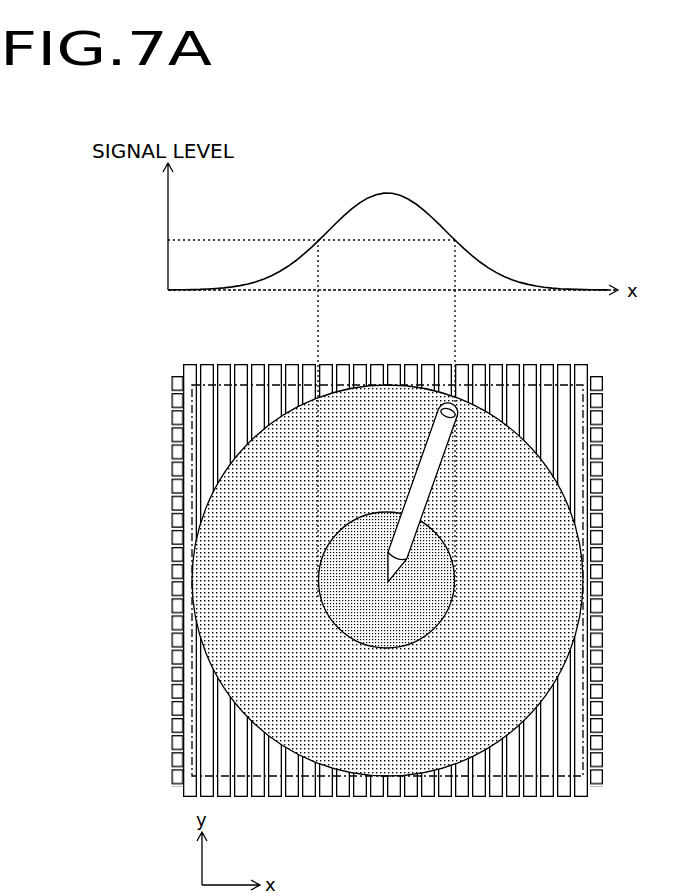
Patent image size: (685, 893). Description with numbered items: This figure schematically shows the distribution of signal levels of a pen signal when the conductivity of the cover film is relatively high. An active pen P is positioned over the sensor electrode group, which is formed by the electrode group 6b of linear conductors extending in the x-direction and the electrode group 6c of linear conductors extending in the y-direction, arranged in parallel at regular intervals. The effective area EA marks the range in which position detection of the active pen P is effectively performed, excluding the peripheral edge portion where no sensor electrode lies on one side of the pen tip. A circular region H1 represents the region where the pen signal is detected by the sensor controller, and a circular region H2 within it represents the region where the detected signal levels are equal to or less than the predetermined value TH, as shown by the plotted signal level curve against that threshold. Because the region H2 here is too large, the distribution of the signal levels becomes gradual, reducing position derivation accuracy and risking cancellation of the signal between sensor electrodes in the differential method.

The electrode group 6b is at (603, 380).
The electrode group 6c is at (563, 790).
The effective area EA is at (585, 432).
The circular region H1 is at (568, 632).
The circular region H2 is at (455, 597).
The active pen P is at (455, 412).
The predetermined value TH is at (292, 241).